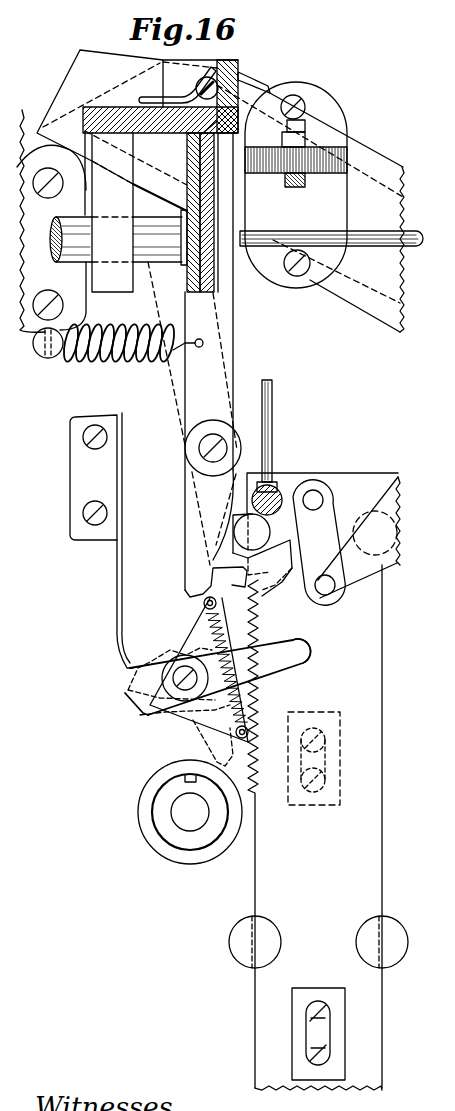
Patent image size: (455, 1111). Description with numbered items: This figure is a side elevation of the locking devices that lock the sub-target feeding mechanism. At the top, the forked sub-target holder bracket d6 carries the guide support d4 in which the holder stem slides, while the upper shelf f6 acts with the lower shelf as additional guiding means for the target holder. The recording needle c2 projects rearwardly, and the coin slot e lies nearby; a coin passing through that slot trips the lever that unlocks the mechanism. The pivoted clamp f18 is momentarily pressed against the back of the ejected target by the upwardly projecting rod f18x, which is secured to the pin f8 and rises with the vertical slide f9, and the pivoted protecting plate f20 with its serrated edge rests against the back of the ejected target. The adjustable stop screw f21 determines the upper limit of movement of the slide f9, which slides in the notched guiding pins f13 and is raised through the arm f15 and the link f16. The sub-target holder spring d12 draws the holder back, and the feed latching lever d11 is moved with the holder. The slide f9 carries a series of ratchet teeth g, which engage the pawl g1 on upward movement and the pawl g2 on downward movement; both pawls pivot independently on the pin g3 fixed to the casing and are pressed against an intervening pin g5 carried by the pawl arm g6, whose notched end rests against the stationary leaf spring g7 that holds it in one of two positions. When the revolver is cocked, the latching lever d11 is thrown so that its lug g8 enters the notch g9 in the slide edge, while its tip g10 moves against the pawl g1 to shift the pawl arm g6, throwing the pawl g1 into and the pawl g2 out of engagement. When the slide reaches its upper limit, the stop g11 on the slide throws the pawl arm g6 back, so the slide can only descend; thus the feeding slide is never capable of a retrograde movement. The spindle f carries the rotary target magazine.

The sub-target holder bracket d6 is at (117, 191).
The upper shelf f6 is at (97, 108).
The protecting plate f20 is at (180, 93).
The clamp f18 is at (258, 82).
The stop screw f21 is at (333, 110).
The recording needle c2 is at (377, 231).
The coin slot e is at (402, 290).
The guide support d4 is at (118, 211).
The feed latching lever d11 is at (233, 362).
The sub-target holder spring d12 is at (100, 364).
The leaf spring g7 is at (117, 623).
The upwardly projecting rod f18x is at (273, 403).
The pin f8 is at (280, 492).
The link f16 is at (333, 501).
The arm f15 is at (380, 572).
The vertical slide f9 is at (369, 649).
The lug g8 is at (218, 566).
The notch g9 is at (282, 552).
The tip g10 is at (192, 590).
The pawl g1 is at (190, 627).
The ratchet teeth g is at (253, 643).
The pin g5 is at (220, 677).
The pawl arm g6 is at (300, 663).
The pin g3 is at (127, 692).
The pawl g2 is at (200, 720).
The spindle f is at (163, 850).
The notched guiding pins f13 is at (243, 953).
The stop g11 is at (333, 975).